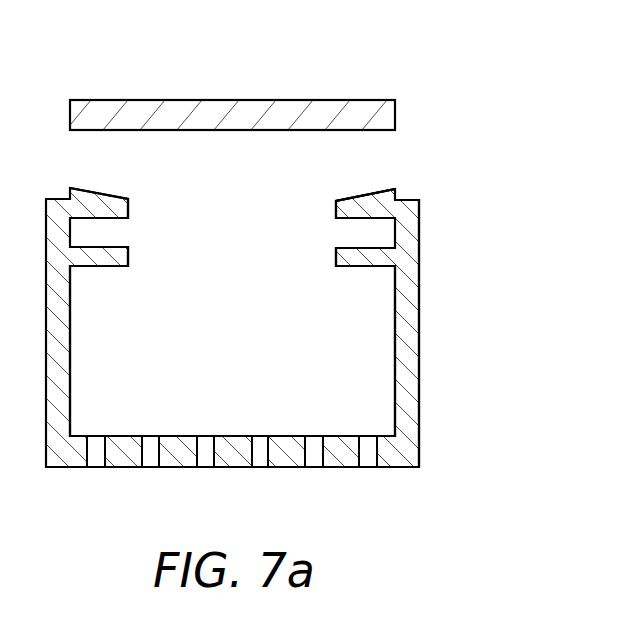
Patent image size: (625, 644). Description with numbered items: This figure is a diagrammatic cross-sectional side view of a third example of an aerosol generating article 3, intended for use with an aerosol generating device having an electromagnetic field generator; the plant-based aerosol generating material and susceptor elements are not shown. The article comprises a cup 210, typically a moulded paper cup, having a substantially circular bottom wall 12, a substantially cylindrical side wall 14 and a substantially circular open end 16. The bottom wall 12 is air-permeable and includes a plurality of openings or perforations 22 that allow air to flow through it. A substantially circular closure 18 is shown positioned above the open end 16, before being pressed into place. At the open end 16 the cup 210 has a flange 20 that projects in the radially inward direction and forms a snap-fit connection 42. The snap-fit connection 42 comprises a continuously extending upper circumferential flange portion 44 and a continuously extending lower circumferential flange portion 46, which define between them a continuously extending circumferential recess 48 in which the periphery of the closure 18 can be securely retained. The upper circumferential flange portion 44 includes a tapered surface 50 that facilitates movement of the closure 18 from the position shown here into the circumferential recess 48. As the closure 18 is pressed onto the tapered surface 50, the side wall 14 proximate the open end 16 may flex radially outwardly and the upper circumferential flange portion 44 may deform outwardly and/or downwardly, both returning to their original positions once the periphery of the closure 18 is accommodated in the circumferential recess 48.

The aerosol generating article 3 is at (114, 54).
The bottom wall 12 is at (341, 458).
The side wall 14 is at (414, 343).
The open end 16 is at (192, 202).
The closure 18 is at (230, 108).
The flange 20 is at (142, 240).
The snap-fit connection 42 is at (149, 265).
The openings or perforations 22 is at (98, 457).
The upper circumferential flange portion 44 is at (361, 203).
The lower circumferential flange portion 46 is at (350, 260).
The circumferential recess 48 is at (345, 232).
The tapered surface 50 is at (340, 193).
The cup 210 is at (452, 152).